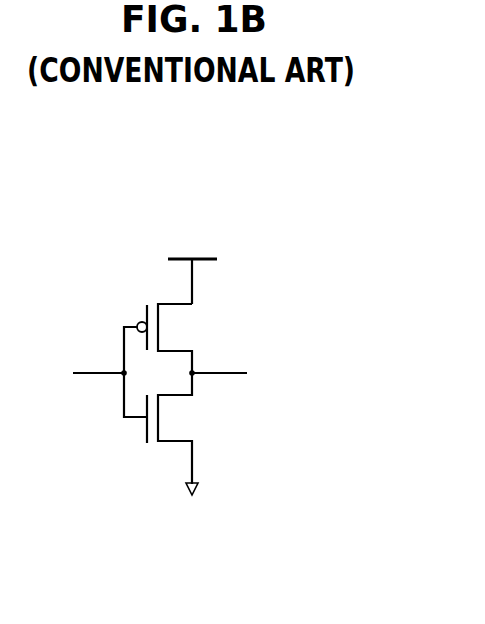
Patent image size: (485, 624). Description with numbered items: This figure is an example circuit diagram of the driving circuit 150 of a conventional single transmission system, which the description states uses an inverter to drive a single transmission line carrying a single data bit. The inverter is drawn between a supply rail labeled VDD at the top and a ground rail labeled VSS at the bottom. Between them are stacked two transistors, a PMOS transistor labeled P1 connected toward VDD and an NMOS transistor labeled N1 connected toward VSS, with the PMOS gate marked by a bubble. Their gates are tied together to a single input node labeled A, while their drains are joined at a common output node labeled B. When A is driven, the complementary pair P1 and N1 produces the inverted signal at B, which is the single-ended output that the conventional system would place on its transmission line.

The driving circuit 150 is at (211, 216).
The power supply voltage VDD is at (192, 267).
The PMOS transistor P1 is at (173, 338).
The NMOS transistor N1 is at (171, 428).
The input signal A is at (87, 375).
The output signal B is at (232, 375).
The ground voltage VSS is at (193, 505).